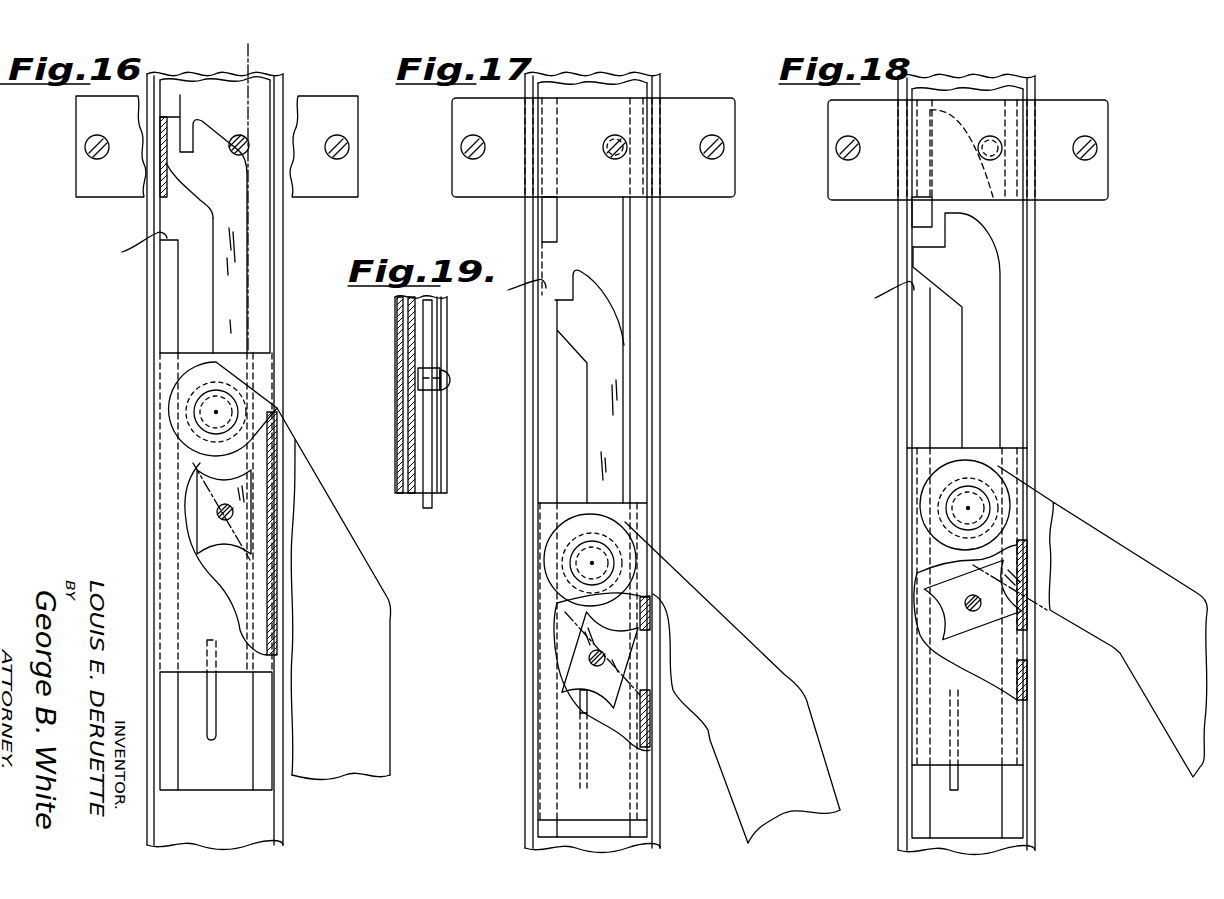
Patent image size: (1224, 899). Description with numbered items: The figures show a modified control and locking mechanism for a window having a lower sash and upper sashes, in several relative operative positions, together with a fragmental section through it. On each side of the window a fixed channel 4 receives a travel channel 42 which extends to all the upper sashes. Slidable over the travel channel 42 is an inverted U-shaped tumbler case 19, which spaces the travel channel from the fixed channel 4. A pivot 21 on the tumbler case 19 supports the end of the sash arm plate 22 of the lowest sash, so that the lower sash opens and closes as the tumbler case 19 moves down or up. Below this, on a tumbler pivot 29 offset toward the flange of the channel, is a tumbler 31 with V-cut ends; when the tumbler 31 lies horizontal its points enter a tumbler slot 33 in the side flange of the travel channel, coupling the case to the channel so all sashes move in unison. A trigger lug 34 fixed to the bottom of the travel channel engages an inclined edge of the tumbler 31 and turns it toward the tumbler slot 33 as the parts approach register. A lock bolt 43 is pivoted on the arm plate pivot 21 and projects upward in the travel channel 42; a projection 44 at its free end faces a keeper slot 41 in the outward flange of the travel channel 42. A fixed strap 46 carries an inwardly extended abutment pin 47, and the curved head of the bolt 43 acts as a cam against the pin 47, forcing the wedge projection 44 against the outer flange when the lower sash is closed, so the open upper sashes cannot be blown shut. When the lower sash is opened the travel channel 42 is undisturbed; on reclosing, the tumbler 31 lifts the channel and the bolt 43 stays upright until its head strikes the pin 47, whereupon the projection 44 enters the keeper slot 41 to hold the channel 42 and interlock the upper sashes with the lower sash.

In FIG. 16, the fixed channel 4 is at (285, 92).
In FIG. 17, the fixed channel 4 is at (662, 91).
In FIG. 19, the fixed channel 4 is at (396, 381).
In FIG. 18, the fixed channel 4 is at (1037, 92).
In FIG. 16, the tumbler case 19 is at (253, 56).
In FIG. 17, the tumbler case 19 is at (567, 783).
In FIG. 18, the tumbler case 19 is at (990, 734).
In FIG. 16, the pivot 21 is at (205, 411).
In FIG. 17, the pivot 21 is at (582, 566).
In FIG. 18, the pivot 21 is at (960, 511).
In FIG. 16, the sash arm plate 22 is at (390, 629).
In FIG. 17, the sash arm plate 22 is at (795, 711).
In FIG. 18, the sash arm plate 22 is at (1135, 575).
In FIG. 16, the tumbler pivot 29 is at (218, 517).
In FIG. 17, the tumbler pivot 29 is at (590, 656).
In FIG. 18, the tumbler pivot 29 is at (962, 607).
In FIG. 16, the tumbler 31 is at (197, 498).
In FIG. 17, the tumbler 31 is at (576, 672).
In FIG. 18, the tumbler 31 is at (945, 586).
In FIG. 16, the tumbler slot 33 is at (267, 610).
In FIG. 17, the tumbler slot 33 is at (650, 678).
In FIG. 18, the tumbler slot 33 is at (970, 620).
In FIG. 16, the trigger lug 34 is at (207, 736).
In FIG. 17, the trigger lug 34 is at (578, 705).
In FIG. 18, the trigger lug 34 is at (958, 783).
In FIG. 16, the keeper slot 41 is at (129, 251).
In FIG. 17, the keeper slot 41 is at (513, 292).
In FIG. 18, the keeper slot 41 is at (879, 298).
In FIG. 16, the travel channel 42 is at (192, 287).
In FIG. 17, the travel channel 42 is at (613, 250).
In FIG. 19, the travel channel 42 is at (400, 345).
In FIG. 18, the travel channel 42 is at (998, 226).
In FIG. 16, the lock bolt 43 is at (234, 137).
In FIG. 17, the lock bolt 43 is at (613, 418).
In FIG. 19, the lock bolt 43 is at (433, 458).
In FIG. 18, the lock bolt 43 is at (956, 135).
In FIG. 16, the projection 44 is at (201, 183).
In FIG. 19, the projection 44 is at (420, 407).
In FIG. 18, the projection 44 is at (917, 164).
In FIG. 16, the fixed strap 46 is at (88, 178).
In FIG. 17, the fixed strap 46 is at (505, 183).
In FIG. 19, the fixed strap 46 is at (445, 408).
In FIG. 18, the fixed strap 46 is at (840, 181).
In FIG. 16, the abutment pin 47 is at (248, 142).
In FIG. 17, the abutment pin 47 is at (628, 140).
In FIG. 19, the abutment pin 47 is at (430, 395).
In FIG. 18, the abutment pin 47 is at (1003, 142).